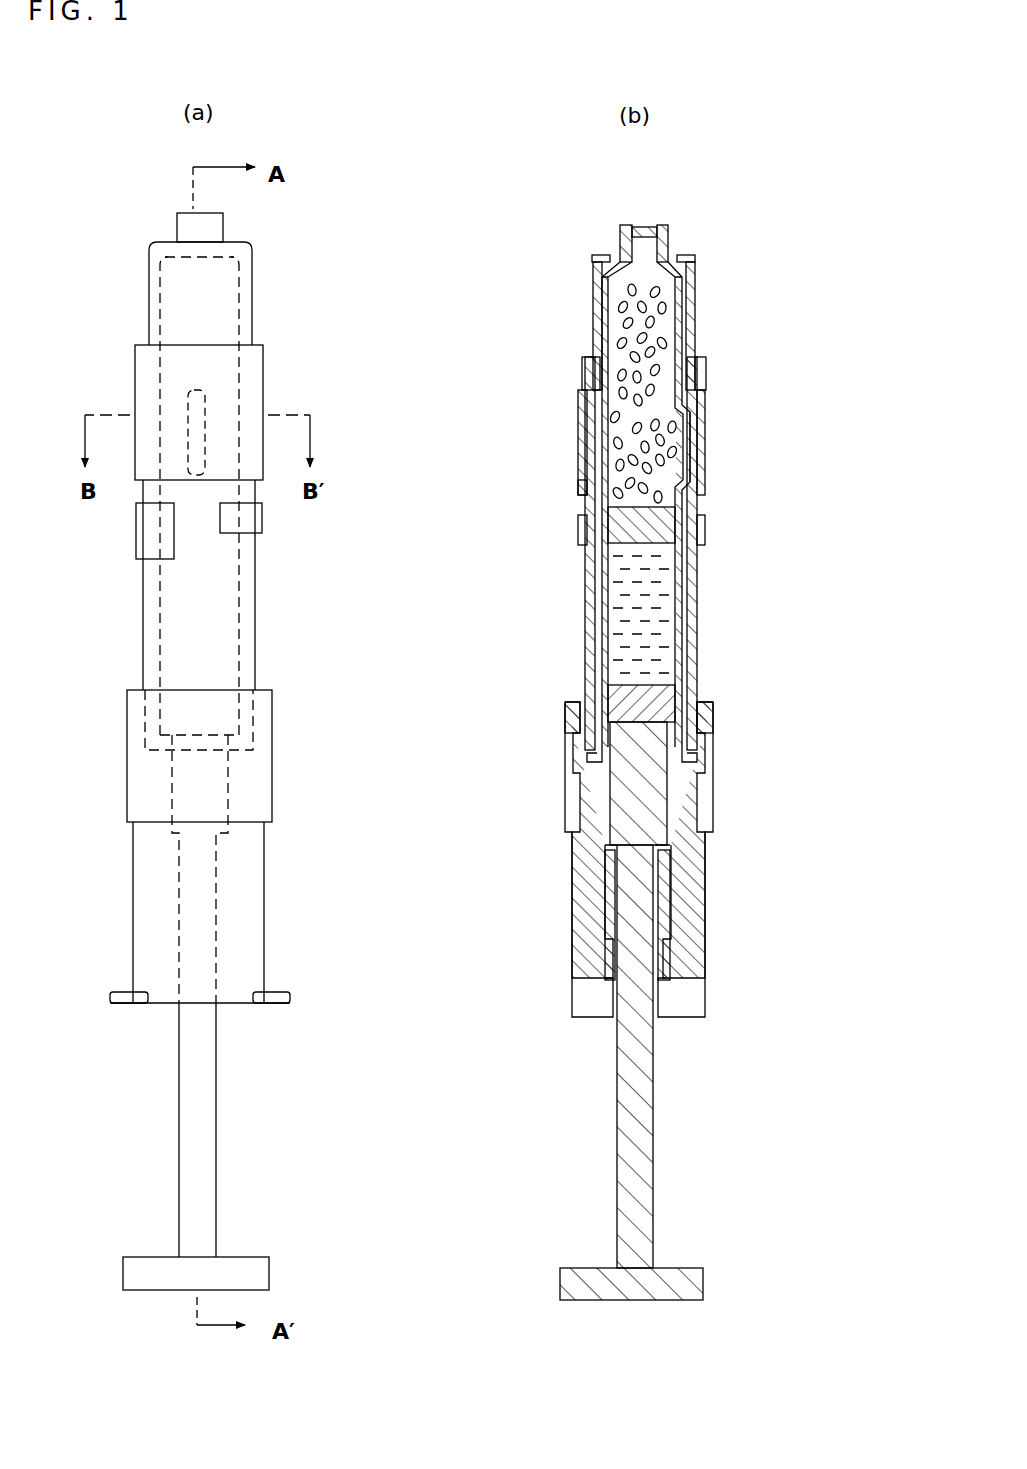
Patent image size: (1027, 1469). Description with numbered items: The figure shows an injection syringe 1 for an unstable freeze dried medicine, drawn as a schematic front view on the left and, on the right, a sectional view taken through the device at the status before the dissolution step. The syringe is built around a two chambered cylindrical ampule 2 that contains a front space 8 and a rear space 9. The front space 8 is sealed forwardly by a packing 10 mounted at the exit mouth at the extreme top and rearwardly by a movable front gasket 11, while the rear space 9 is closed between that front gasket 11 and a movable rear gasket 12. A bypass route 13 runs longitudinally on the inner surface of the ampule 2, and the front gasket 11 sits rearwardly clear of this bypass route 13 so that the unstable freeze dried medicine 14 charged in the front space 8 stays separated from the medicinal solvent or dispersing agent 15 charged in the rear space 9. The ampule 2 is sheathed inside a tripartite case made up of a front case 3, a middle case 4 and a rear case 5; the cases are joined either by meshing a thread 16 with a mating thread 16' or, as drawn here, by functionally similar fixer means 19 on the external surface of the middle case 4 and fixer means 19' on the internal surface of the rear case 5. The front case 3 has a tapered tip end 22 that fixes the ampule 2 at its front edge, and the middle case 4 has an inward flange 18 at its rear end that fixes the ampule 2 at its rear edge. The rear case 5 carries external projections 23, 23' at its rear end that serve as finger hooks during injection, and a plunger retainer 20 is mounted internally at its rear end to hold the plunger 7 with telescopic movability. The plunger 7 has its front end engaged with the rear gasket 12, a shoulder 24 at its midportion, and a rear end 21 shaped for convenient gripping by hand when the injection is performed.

The injection syringe 1 is at (160, 228).
The multi-chambered cylindrical ampule 2 is at (227, 287).
The front case 3 is at (252, 320).
The middle case 4 is at (255, 600).
The rear case 5 is at (265, 840).
The plunger 7 is at (216, 1145).
The front space 8 is at (660, 335).
The rear space 9 is at (663, 653).
The packing 10 is at (641, 228).
The front gasket 11 is at (617, 520).
The rear gasket 12 is at (618, 700).
The bypass route 13 is at (198, 403).
The unstable freeze dried medicine 14 is at (676, 452).
The medicinal solvent or dispersing agent 15 is at (660, 603).
The thread 16 is at (587, 423).
The thread 16' is at (528, 438).
The inward flange 18 is at (590, 757).
The fixer means 19 is at (363, 532).
The fixer means 19' is at (588, 718).
The plunger retainer 20 is at (605, 948).
The rear end of plunger 21 is at (269, 1272).
The tapered tip end 22 is at (600, 256).
The projection 23 is at (85, 999).
The projection 23' is at (322, 1001).
The shoulder 24 is at (605, 837).